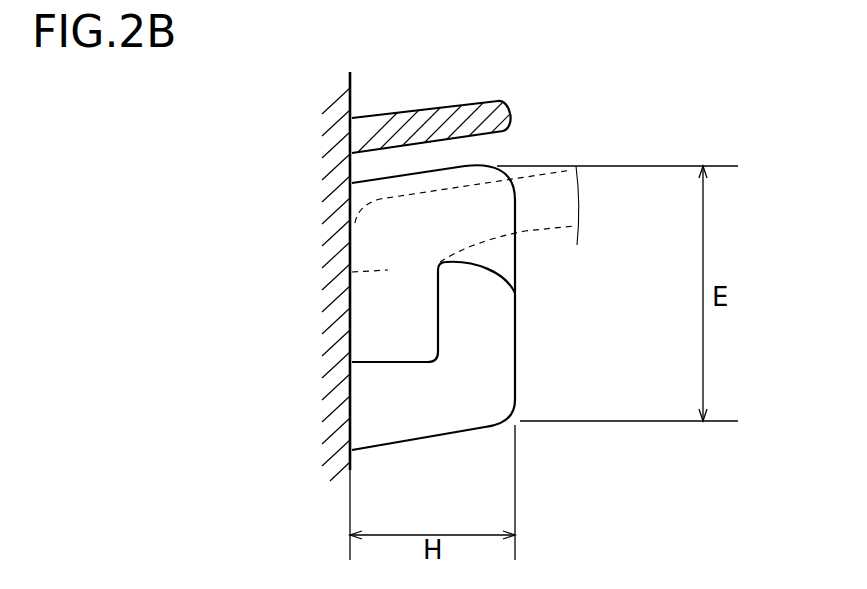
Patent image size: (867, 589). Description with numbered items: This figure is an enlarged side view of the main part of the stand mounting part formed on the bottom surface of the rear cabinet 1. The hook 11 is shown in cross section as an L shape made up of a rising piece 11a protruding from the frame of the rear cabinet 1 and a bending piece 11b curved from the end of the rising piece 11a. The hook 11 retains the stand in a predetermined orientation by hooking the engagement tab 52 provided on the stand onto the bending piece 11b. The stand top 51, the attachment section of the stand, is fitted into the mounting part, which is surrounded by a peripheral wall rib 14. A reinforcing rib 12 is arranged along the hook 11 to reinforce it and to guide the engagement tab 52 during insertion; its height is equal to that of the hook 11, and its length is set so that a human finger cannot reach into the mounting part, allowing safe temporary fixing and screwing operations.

The rear cabinet 1 is at (327, 122).
The peripheral wall rib 14 is at (507, 103).
The hook 11 is at (412, 307).
The rising piece 11a is at (380, 417).
The bending piece 11b is at (463, 325).
The reinforcing rib 12 is at (468, 225).
The stand top 51 is at (553, 198).
The engagement tab 52 is at (352, 272).